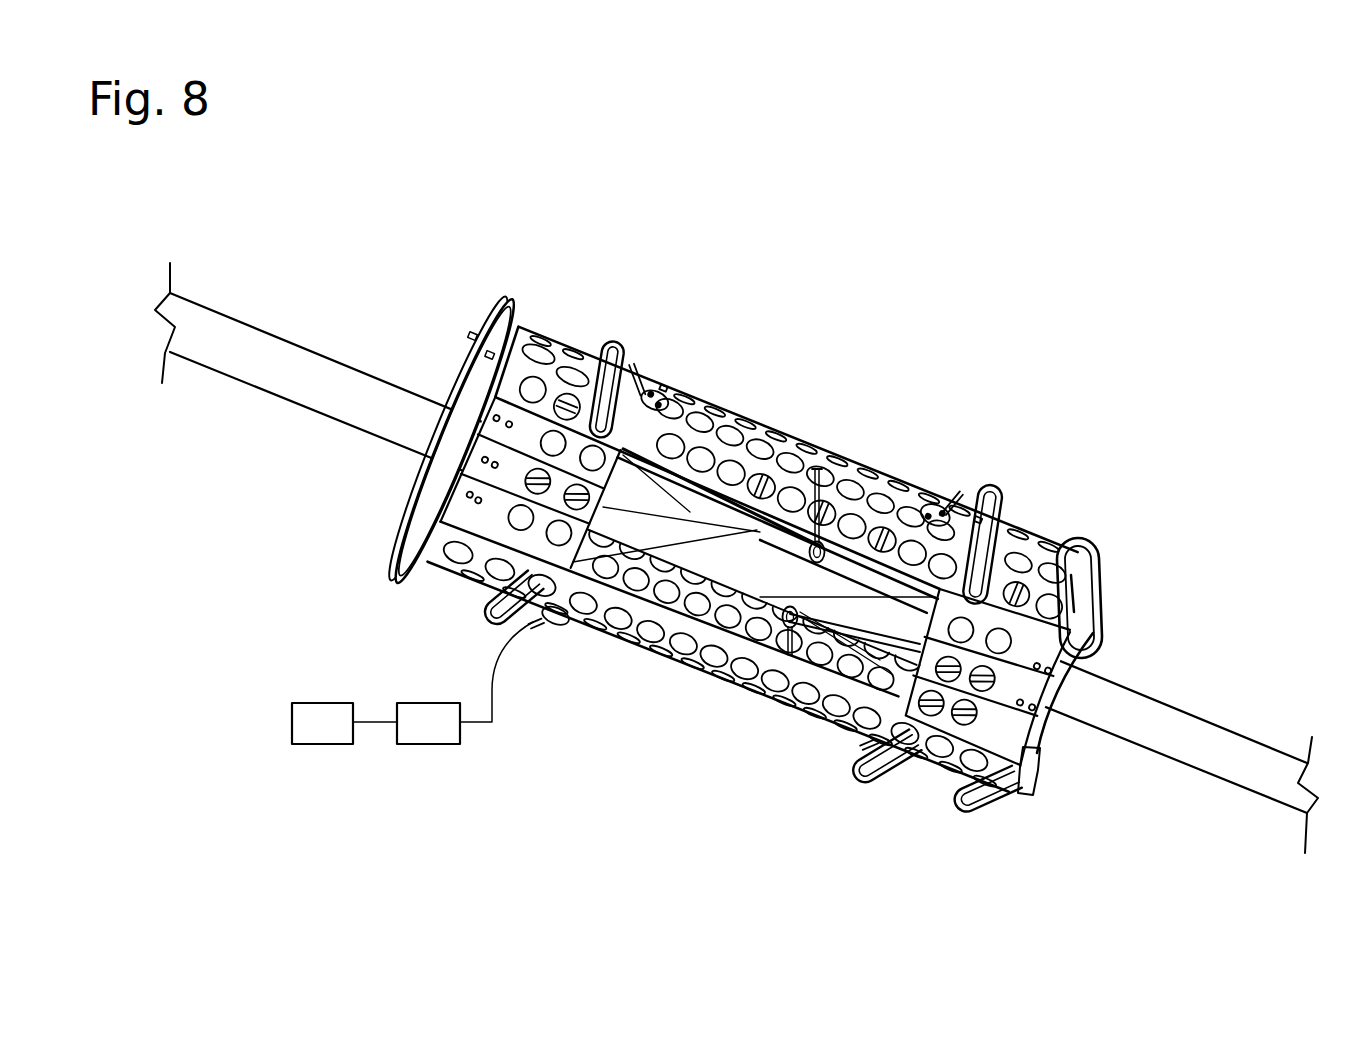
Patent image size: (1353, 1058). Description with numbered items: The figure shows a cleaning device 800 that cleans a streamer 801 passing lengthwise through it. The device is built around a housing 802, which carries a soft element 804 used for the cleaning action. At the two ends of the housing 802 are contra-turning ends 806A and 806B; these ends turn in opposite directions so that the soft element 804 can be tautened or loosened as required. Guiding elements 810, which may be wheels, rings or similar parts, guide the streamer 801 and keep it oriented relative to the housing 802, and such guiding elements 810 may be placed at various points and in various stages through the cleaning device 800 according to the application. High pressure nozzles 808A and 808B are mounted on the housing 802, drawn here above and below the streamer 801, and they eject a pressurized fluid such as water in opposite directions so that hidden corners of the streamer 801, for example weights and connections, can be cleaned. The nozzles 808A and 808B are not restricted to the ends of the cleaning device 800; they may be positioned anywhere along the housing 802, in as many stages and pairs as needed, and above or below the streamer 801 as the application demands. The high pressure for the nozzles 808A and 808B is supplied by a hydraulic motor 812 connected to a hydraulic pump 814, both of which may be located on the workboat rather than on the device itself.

The cleaning device 800 is at (776, 516).
The streamer 801 is at (309, 377).
The housing 802 is at (893, 487).
The soft element 804 is at (680, 510).
The contra-turning end 806A is at (562, 337).
The contra-turning end 806B is at (1015, 530).
The high pressure nozzle 808A is at (650, 380).
The high pressure nozzle 808B is at (960, 503).
The guiding elements 810 is at (772, 608).
The hydraulic motor 812 is at (348, 736).
The hydraulic pump 814 is at (453, 736).